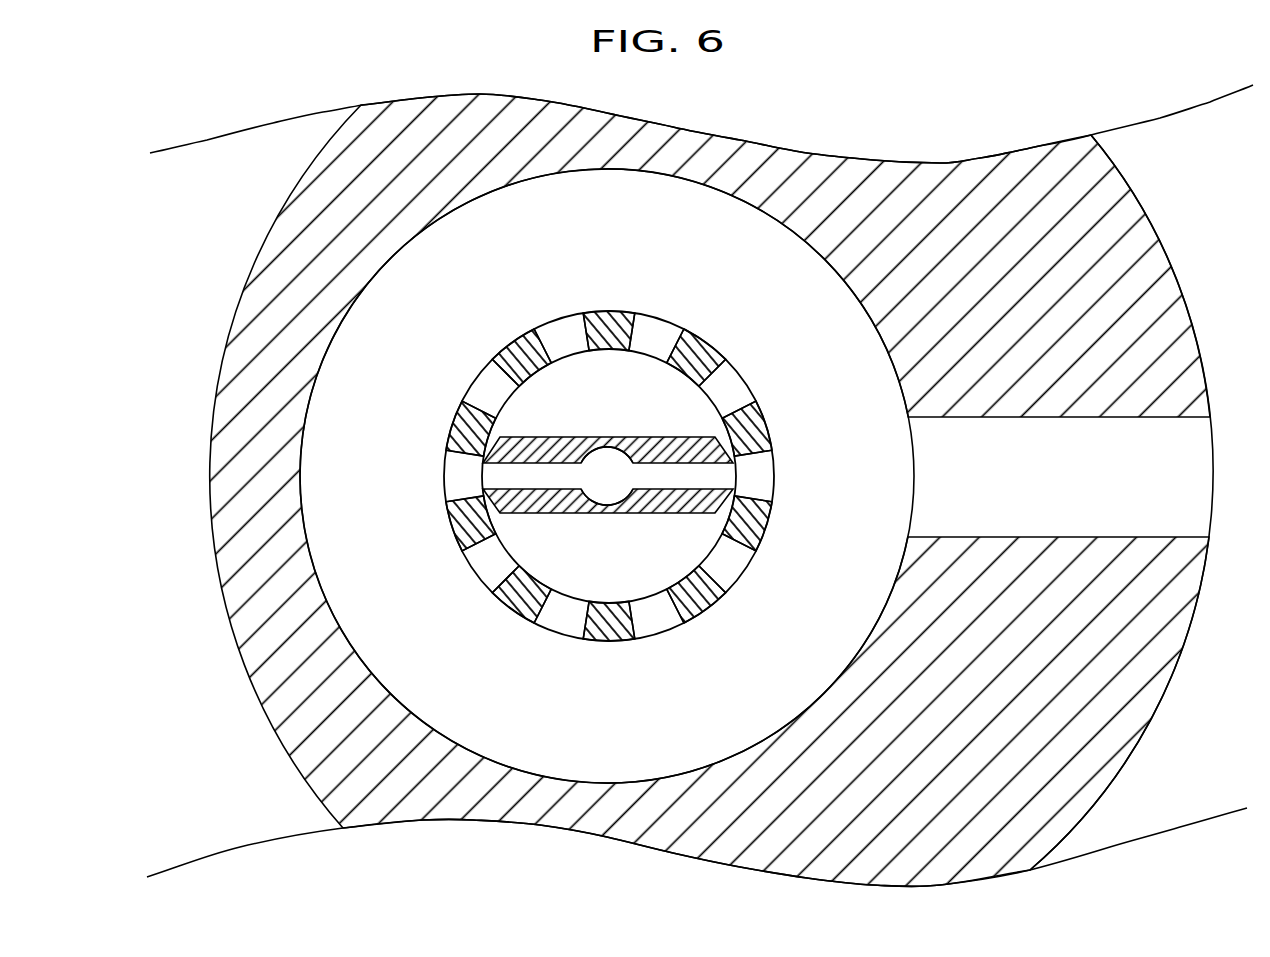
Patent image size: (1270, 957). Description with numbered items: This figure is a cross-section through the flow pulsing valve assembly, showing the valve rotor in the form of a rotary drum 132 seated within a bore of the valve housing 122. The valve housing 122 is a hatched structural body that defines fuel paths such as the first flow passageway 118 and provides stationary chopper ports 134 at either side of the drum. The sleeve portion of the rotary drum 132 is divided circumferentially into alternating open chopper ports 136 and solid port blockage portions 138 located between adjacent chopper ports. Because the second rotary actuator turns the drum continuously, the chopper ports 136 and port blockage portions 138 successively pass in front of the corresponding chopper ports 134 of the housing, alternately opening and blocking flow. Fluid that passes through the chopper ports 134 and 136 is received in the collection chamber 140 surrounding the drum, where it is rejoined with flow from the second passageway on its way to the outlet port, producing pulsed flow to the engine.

The collection chamber 140 is at (725, 210).
The valve housing 122 is at (563, 440).
The first flow passageway 118 is at (607, 472).
The rotary drum 132 is at (597, 492).
The chopper ports 134 is at (492, 475).
The chopper ports 136 is at (458, 480).
The port blockage portions 138 is at (465, 520).